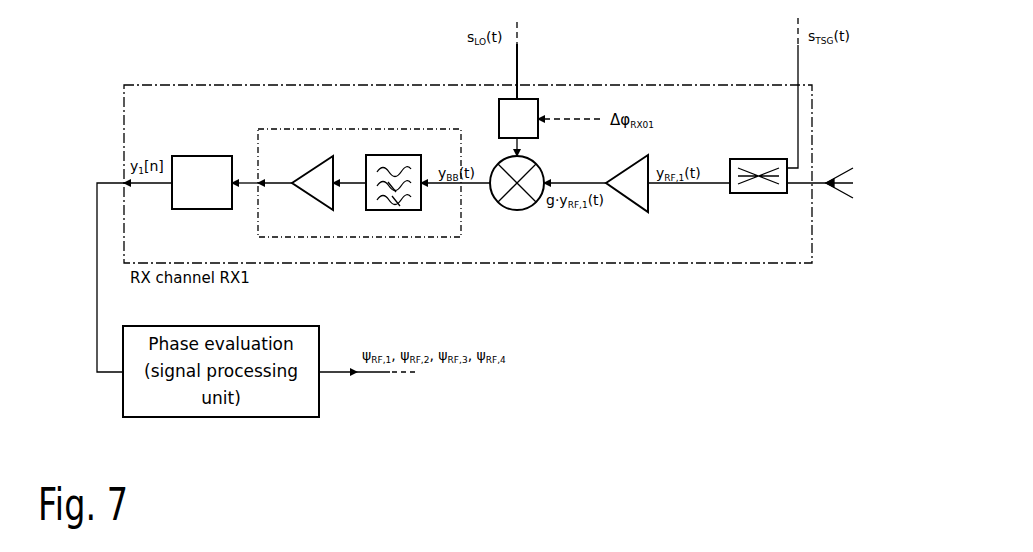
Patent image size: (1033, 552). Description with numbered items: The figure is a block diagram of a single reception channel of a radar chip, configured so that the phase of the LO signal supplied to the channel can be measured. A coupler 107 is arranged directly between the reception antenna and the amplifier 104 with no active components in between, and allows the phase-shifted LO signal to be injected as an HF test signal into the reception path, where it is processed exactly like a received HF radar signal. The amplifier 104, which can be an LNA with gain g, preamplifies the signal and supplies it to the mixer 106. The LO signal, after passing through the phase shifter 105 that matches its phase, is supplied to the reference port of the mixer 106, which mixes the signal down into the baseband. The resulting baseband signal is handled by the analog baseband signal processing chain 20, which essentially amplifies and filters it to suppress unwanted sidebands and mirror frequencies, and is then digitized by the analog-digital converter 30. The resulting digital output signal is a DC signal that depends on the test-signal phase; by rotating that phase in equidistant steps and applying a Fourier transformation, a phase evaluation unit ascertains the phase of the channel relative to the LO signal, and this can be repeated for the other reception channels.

The analog baseband signal processing chain 20 is at (258, 140).
The analog-digital converter 30 is at (185, 209).
The amplifier 104 is at (636, 200).
The phase shifter 105 is at (499, 106).
The mixer 106 is at (526, 208).
The coupler 107 is at (765, 193).